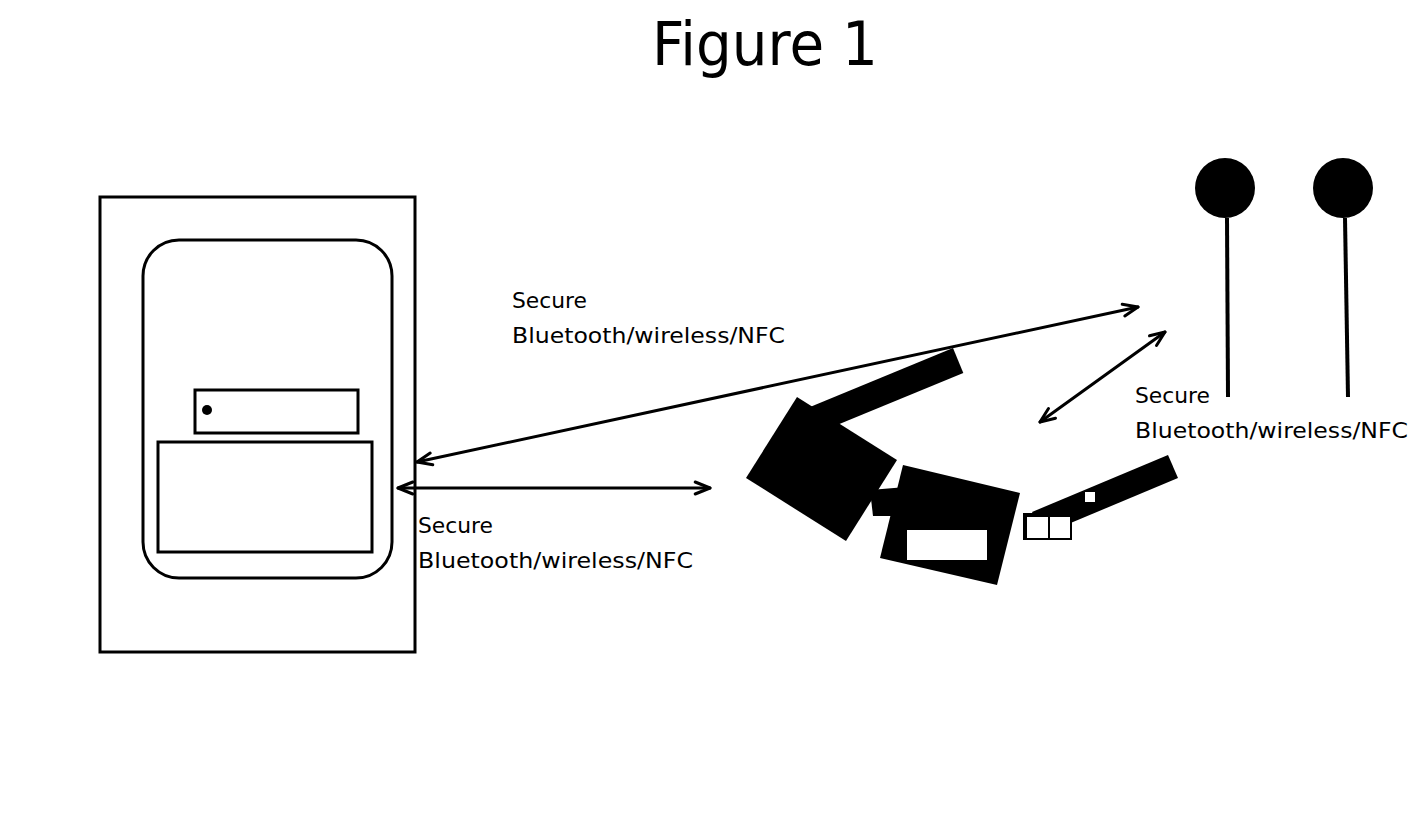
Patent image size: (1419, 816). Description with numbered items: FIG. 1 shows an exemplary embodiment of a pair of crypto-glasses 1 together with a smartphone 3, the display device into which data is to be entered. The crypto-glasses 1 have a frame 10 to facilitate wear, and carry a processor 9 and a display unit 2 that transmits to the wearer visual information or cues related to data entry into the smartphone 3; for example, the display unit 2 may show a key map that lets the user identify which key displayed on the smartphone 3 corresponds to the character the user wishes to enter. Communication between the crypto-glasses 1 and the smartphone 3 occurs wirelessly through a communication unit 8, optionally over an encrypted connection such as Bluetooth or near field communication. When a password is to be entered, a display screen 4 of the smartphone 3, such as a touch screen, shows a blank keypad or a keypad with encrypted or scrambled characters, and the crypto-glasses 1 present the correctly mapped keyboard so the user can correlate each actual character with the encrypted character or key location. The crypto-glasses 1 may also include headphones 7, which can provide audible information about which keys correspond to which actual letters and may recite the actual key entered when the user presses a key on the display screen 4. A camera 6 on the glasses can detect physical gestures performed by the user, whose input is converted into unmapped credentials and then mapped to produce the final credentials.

The crypto-glasses 1 is at (868, 598).
The display unit 2 is at (1000, 588).
The smartphone 3 is at (257, 424).
The display screen 4 is at (267, 409).
The camera 6 is at (793, 507).
The headphones 7 is at (1170, 252).
The communication unit 8 is at (1050, 552).
The processor 9 is at (1107, 515).
The frame 10 is at (747, 480).